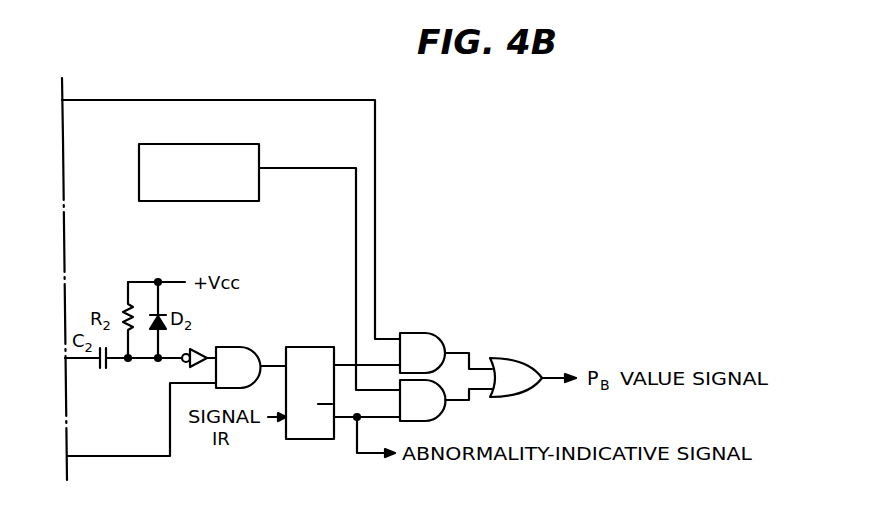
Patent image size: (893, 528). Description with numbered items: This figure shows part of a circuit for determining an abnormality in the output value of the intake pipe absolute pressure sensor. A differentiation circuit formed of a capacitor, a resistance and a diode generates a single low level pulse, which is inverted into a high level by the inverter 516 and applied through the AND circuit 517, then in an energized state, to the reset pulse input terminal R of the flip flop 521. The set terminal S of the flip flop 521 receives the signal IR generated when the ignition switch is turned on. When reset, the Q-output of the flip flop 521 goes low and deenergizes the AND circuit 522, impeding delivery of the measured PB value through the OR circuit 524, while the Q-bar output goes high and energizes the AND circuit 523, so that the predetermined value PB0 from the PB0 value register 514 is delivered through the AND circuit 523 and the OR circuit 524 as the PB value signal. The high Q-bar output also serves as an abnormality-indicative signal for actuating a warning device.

The PB0 value register 514 is at (193, 201).
The inverter 516 is at (182, 363).
The AND circuit 517 is at (240, 347).
The flip flop 521 is at (313, 347).
The AND circuit 522 is at (422, 333).
The AND circuit 523 is at (448, 408).
The OR circuit 524 is at (512, 358).